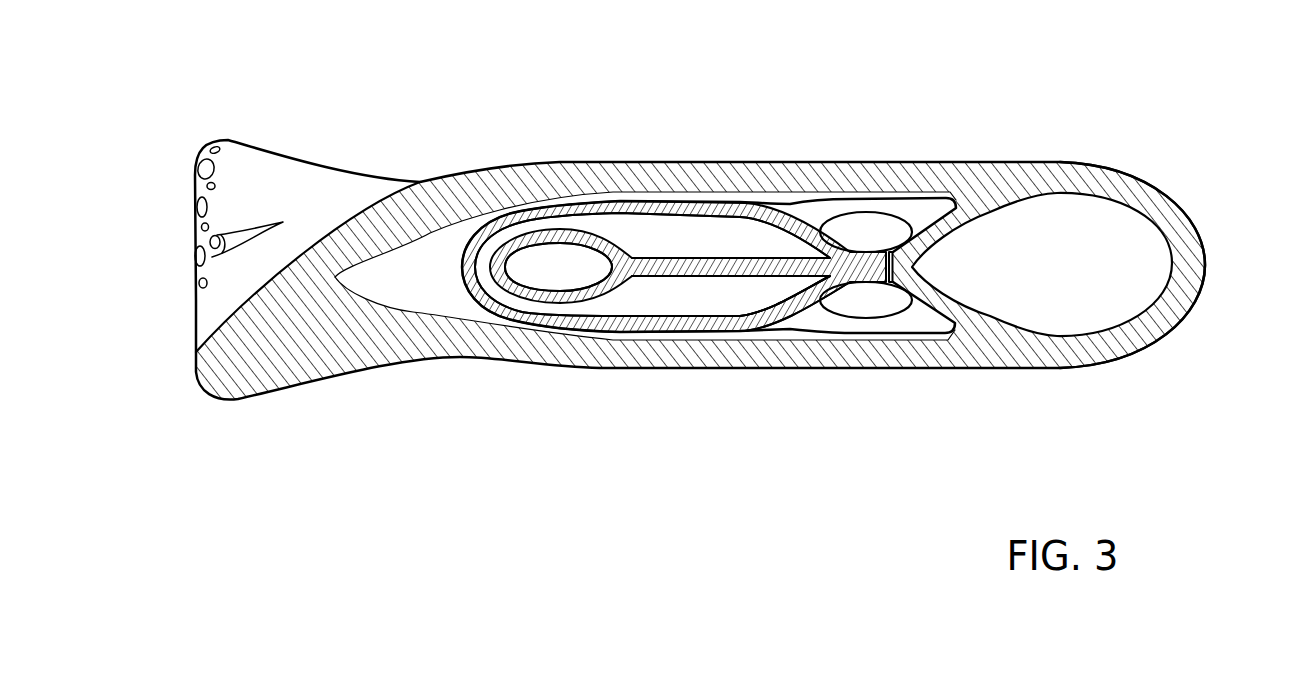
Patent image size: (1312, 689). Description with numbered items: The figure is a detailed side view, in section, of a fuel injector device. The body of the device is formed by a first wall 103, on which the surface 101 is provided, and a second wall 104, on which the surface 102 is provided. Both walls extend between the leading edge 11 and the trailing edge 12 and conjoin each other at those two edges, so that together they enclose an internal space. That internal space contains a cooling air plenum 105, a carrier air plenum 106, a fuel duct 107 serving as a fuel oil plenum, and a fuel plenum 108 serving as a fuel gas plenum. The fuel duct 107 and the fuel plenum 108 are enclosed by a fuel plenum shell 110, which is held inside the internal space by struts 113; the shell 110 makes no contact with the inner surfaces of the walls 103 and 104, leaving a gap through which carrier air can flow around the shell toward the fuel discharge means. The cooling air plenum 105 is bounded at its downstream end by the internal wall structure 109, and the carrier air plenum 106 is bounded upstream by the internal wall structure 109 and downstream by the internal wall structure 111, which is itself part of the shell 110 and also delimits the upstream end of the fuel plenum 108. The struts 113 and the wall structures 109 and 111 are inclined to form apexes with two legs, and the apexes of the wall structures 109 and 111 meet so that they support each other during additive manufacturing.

The leading edge 11 is at (1207, 265).
The trailing edge 12 is at (197, 242).
The surface 101 is at (1057, 162).
The surface 102 is at (772, 357).
The first wall 103 is at (670, 160).
The second wall 104 is at (980, 343).
The cooling air plenum 105 is at (1098, 228).
The carrier air plenum 106 is at (878, 226).
The fuel duct 107 is at (542, 263).
The fuel plenum 108 is at (690, 292).
The internal wall structure 109 is at (913, 266).
The fuel plenum shell 110 is at (628, 197).
The internal wall structure 111 is at (833, 293).
The struts 113 is at (847, 200).